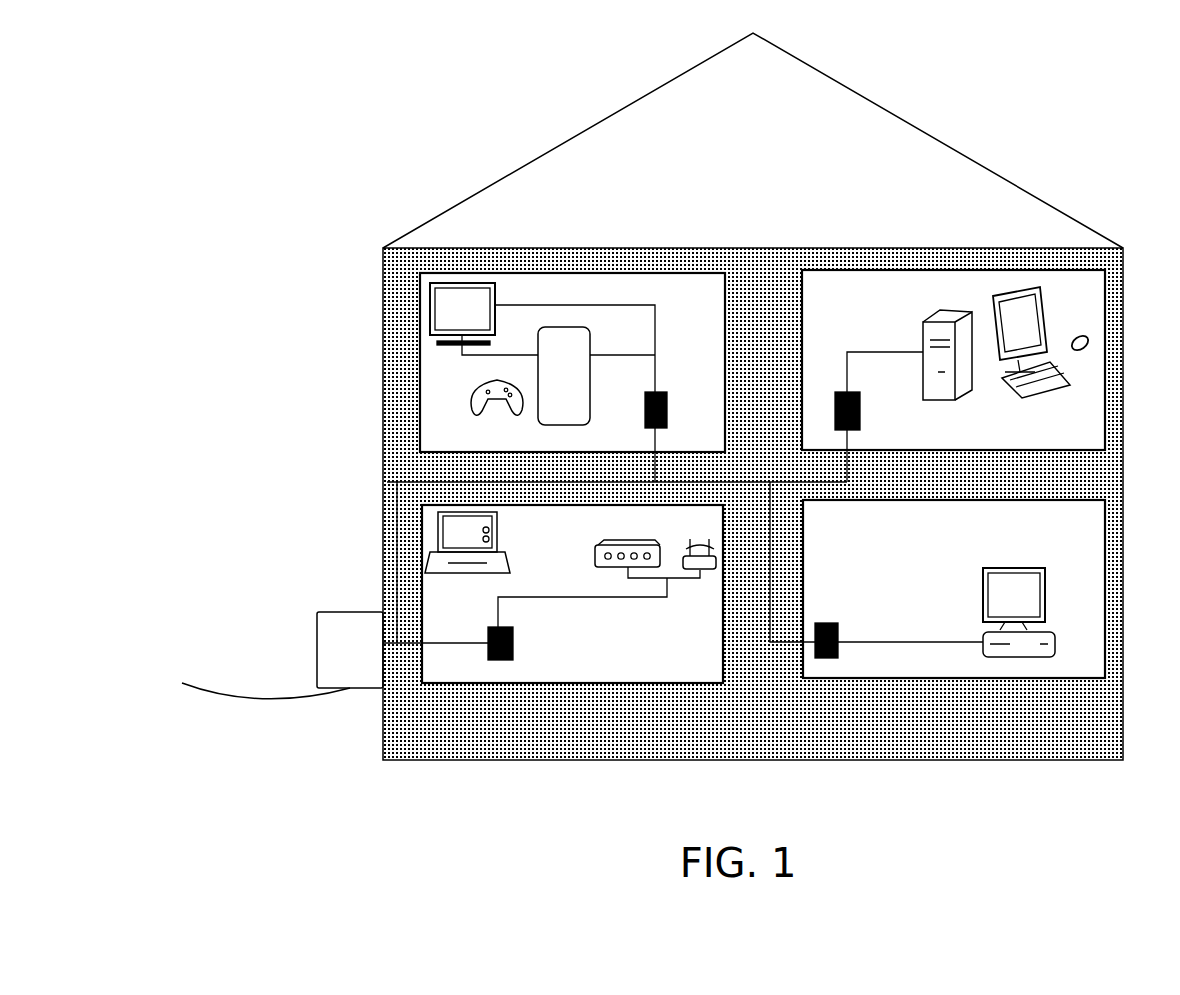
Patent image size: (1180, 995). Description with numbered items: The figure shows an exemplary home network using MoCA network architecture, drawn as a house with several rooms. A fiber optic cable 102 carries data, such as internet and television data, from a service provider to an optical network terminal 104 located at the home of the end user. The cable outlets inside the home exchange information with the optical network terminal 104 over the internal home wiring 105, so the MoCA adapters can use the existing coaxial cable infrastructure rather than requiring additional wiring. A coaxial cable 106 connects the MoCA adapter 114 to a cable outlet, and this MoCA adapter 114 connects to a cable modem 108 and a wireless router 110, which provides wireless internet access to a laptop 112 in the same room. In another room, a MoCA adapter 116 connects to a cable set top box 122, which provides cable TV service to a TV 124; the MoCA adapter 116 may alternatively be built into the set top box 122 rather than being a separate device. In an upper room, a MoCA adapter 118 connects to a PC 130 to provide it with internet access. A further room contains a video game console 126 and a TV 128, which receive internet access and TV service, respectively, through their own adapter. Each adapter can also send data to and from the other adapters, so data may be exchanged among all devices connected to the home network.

The fiber optic cable 102 is at (258, 705).
The optical network terminal 104 is at (317, 652).
The internal home wiring 105 is at (425, 480).
The coaxial cable 106 is at (453, 648).
The cable modem 108 is at (596, 556).
The wireless router 110 is at (690, 542).
The laptop 112 is at (422, 507).
The MoCA adapter 114 is at (515, 632).
The MoCA adapter 116 is at (823, 659).
The MoCA adapter 118 is at (856, 391).
The cable set top box 122 is at (1025, 659).
The TV 124 is at (1045, 570).
The video game console 126 is at (540, 376).
The TV 128 is at (420, 290).
The PC 130 is at (955, 316).